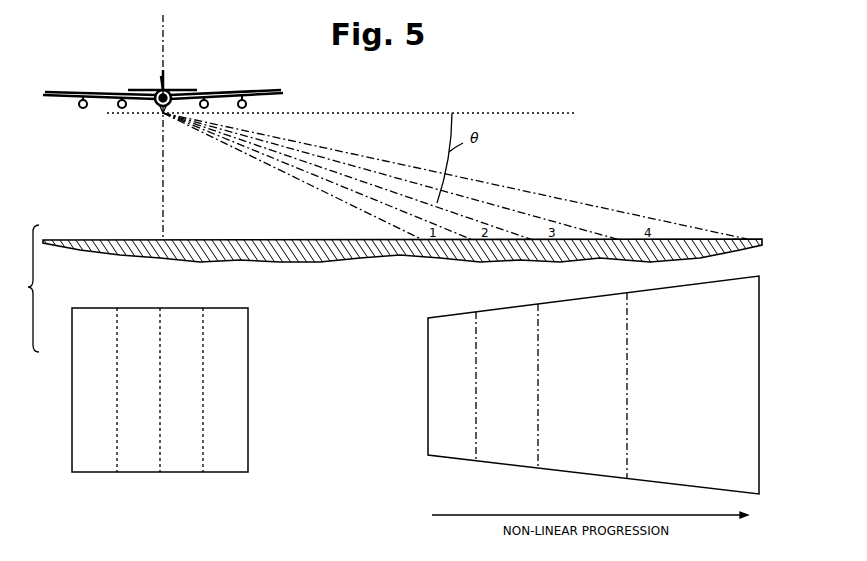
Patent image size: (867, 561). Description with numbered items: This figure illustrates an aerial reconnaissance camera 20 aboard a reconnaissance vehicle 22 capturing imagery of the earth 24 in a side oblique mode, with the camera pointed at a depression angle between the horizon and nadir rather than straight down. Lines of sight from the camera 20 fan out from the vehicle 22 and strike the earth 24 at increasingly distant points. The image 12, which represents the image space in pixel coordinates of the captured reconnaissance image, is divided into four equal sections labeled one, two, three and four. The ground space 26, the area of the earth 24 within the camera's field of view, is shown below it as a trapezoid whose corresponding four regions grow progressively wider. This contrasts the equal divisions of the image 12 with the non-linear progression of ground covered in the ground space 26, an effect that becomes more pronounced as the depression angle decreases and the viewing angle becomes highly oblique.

The aerial reconnaissance camera 20 is at (160, 115).
The reconnaissance vehicle 22 is at (168, 92).
The earth 24 is at (297, 259).
The image 12 is at (180, 473).
The ground space 26 is at (443, 458).